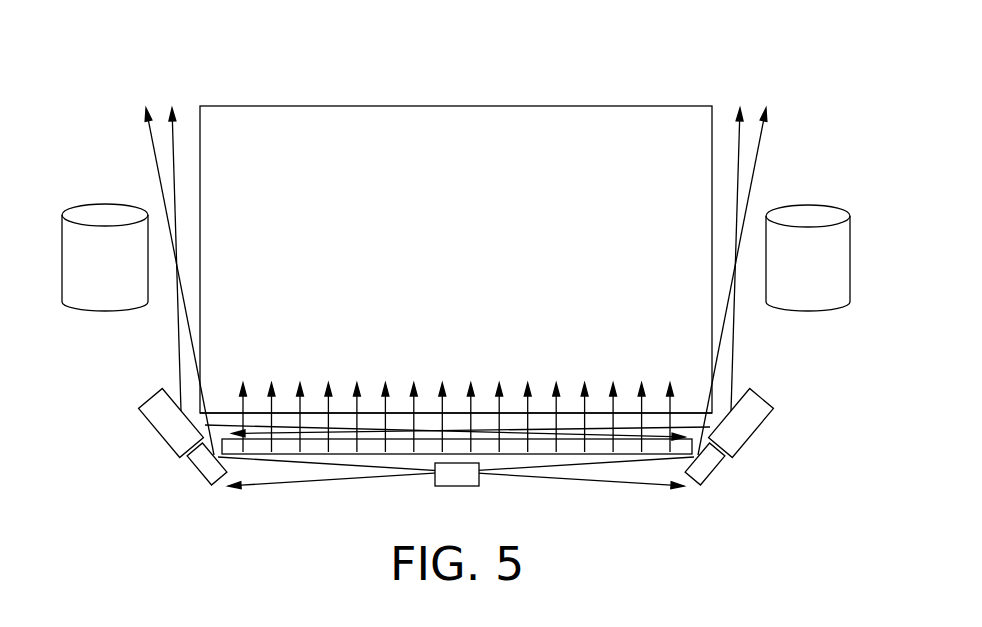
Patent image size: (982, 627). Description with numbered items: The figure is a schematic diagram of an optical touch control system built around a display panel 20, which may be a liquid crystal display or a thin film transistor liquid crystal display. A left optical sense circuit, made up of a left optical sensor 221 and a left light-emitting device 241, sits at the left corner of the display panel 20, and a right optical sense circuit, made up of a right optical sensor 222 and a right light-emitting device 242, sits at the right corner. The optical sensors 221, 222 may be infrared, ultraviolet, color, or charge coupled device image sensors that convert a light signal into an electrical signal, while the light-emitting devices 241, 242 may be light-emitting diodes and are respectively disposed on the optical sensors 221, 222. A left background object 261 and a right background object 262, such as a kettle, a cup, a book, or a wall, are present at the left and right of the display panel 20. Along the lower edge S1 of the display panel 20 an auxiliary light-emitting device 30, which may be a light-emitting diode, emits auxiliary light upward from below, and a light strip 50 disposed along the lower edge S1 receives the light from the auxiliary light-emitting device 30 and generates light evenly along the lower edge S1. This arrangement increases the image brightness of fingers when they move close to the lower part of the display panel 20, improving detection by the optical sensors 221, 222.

The display panel 20 is at (455, 106).
The lower edge S1 is at (485, 413).
The auxiliary light-emitting device 30 is at (457, 487).
The light strip 50 is at (628, 455).
The left optical sensor 221 is at (155, 394).
The right optical sensor 222 is at (757, 394).
The left light-emitting device 241 is at (198, 471).
The right light-emitting device 242 is at (714, 471).
The left background object 261 is at (103, 214).
The right background object 262 is at (809, 214).